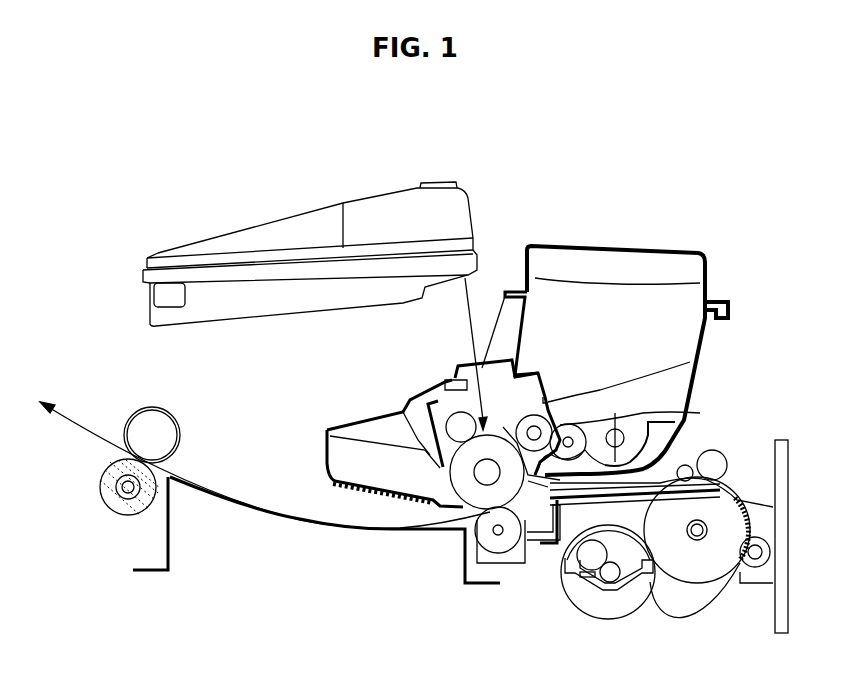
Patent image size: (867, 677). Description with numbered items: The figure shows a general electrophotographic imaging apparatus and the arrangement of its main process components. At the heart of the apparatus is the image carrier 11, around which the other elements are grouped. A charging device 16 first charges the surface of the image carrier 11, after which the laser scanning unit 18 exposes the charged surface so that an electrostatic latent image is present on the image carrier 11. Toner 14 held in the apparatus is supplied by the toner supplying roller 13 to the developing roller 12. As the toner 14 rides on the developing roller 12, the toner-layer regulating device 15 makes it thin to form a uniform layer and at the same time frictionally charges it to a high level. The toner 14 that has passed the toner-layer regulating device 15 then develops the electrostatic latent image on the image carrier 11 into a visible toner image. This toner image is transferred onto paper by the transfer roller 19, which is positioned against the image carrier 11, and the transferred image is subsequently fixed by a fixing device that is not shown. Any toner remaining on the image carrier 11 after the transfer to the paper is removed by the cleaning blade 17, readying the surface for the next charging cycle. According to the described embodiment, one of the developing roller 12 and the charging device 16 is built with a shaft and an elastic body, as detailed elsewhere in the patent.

The image carrier 11 is at (430, 437).
The developing roller 12 is at (690, 413).
The toner supplying roller 13 is at (590, 443).
The toner 14 is at (650, 397).
The toner-layer regulating device 15 is at (600, 410).
The charging device 16 is at (452, 412).
The cleaning blade 17 is at (350, 430).
The laser scanning unit 18 is at (291, 220).
The transfer roller 19 is at (517, 563).